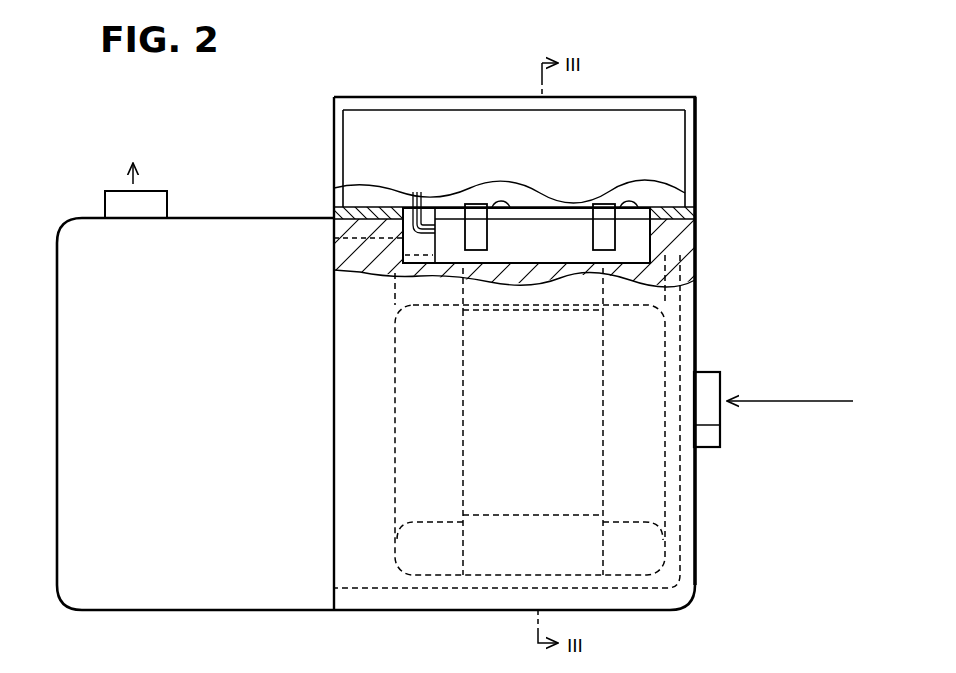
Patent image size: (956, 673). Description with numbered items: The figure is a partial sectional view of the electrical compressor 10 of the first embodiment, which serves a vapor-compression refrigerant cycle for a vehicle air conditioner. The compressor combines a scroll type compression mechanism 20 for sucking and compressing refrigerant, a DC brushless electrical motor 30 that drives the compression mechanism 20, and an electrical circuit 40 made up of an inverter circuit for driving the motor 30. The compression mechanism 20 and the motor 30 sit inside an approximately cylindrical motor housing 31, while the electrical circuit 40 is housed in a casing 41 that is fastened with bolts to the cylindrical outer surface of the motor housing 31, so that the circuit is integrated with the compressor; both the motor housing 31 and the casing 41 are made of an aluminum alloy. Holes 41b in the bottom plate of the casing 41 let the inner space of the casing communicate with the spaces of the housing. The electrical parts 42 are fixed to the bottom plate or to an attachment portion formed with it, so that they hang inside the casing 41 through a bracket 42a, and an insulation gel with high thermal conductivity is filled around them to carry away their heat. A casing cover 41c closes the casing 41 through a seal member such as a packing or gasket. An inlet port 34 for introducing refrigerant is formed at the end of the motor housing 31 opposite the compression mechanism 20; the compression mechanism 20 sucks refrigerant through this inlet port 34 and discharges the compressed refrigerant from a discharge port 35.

The electrical compressor 10 is at (308, 149).
The compression mechanism 20 is at (137, 573).
The electrical motor 30 is at (622, 462).
The motor housing 31 is at (640, 322).
The inlet port 34 is at (713, 397).
The discharge port 35 is at (105, 208).
The electrical circuit 40 is at (658, 178).
The casing 41 is at (698, 157).
The holes 41b is at (350, 188).
The casing cover 41c is at (662, 100).
The electrical parts 42 is at (630, 238).
The bracket 42a is at (457, 207).